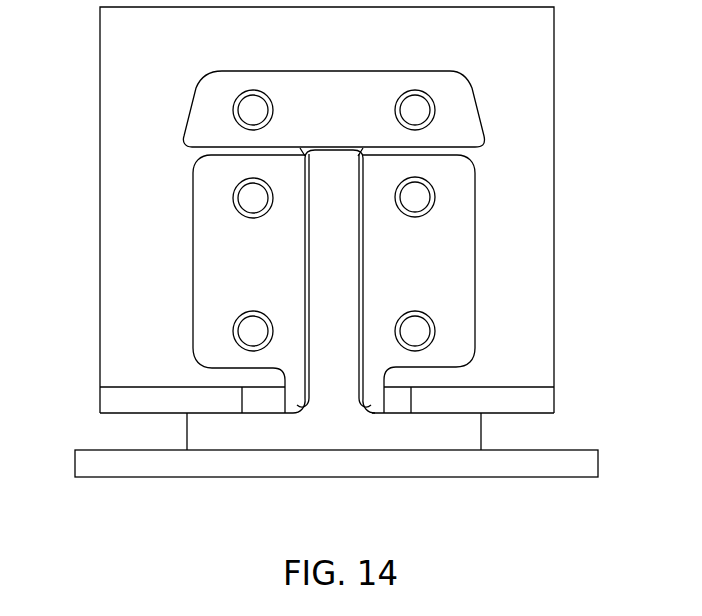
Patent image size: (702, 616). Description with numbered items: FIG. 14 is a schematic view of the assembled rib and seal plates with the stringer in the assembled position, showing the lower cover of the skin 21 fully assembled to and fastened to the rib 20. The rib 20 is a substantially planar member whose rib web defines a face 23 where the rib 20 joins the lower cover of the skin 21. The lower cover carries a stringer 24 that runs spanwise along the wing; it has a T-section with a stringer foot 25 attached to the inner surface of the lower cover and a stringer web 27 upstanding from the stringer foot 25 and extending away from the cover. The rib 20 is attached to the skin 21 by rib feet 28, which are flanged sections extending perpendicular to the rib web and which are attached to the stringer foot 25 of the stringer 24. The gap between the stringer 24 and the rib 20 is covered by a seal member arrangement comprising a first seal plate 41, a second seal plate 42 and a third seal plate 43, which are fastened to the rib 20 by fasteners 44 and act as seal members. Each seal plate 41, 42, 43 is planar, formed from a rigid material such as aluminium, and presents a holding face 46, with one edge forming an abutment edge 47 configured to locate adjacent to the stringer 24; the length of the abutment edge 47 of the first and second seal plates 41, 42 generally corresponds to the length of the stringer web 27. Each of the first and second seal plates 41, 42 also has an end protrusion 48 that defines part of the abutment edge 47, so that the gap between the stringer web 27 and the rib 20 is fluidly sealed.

The rib 20 is at (534, 74).
The skin 21 is at (152, 465).
The face 23 is at (533, 162).
The stringer 24 is at (455, 438).
The stringer foot 25 is at (248, 432).
The stringer web 27 is at (342, 315).
The rib foot 28 is at (545, 400).
The first seal plate 41 is at (200, 273).
The second seal plate 42 is at (450, 278).
The third seal plate 43 is at (345, 100).
The fasteners 44 is at (410, 97).
The holding face 46 is at (455, 320).
The abutment edge 47 is at (318, 250).
The end protrusion 48 is at (305, 398).